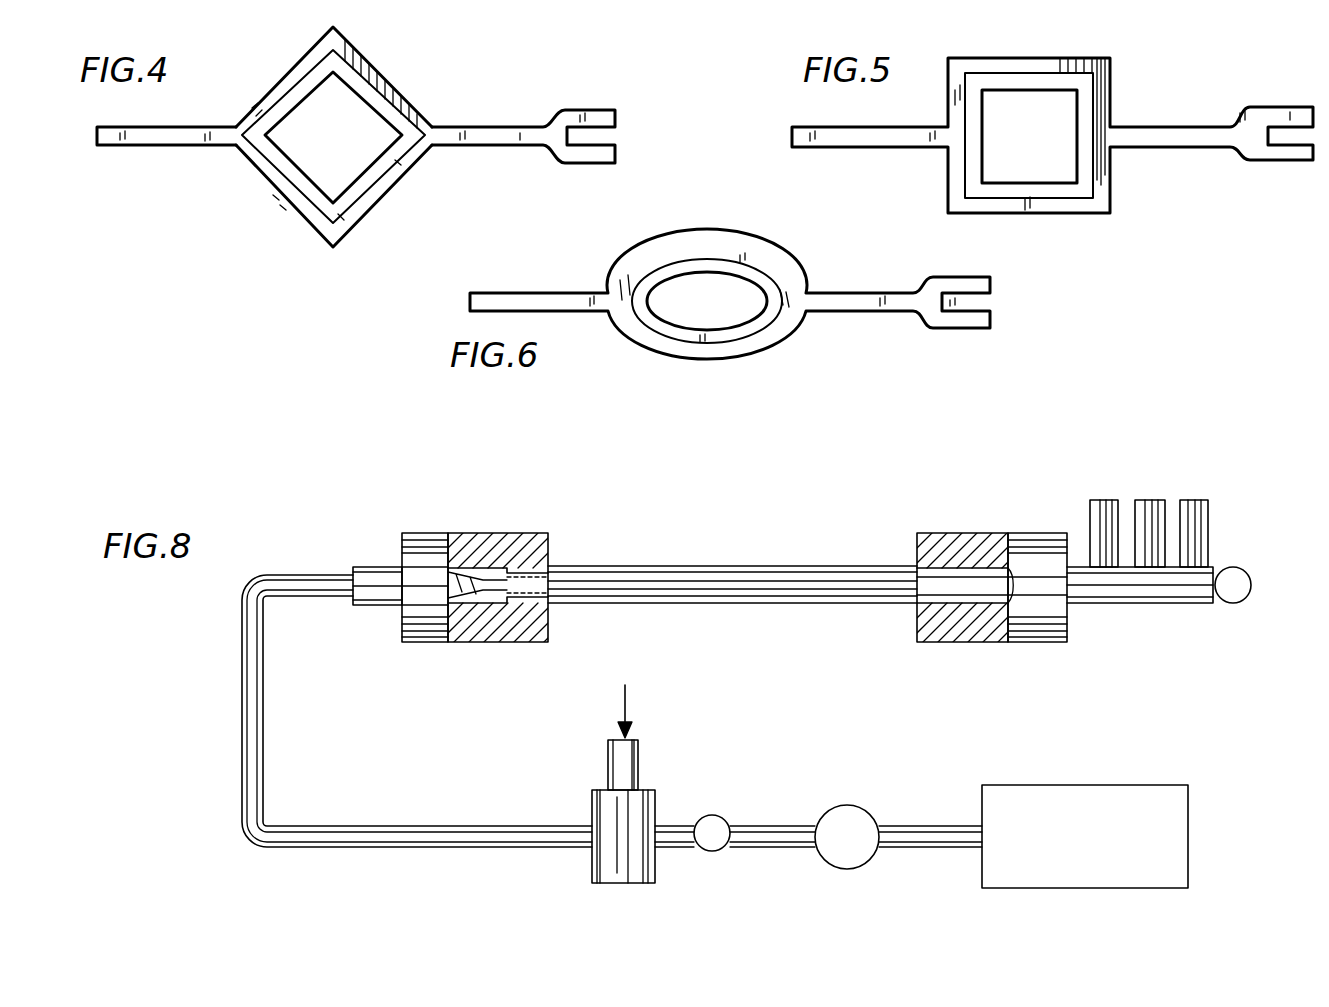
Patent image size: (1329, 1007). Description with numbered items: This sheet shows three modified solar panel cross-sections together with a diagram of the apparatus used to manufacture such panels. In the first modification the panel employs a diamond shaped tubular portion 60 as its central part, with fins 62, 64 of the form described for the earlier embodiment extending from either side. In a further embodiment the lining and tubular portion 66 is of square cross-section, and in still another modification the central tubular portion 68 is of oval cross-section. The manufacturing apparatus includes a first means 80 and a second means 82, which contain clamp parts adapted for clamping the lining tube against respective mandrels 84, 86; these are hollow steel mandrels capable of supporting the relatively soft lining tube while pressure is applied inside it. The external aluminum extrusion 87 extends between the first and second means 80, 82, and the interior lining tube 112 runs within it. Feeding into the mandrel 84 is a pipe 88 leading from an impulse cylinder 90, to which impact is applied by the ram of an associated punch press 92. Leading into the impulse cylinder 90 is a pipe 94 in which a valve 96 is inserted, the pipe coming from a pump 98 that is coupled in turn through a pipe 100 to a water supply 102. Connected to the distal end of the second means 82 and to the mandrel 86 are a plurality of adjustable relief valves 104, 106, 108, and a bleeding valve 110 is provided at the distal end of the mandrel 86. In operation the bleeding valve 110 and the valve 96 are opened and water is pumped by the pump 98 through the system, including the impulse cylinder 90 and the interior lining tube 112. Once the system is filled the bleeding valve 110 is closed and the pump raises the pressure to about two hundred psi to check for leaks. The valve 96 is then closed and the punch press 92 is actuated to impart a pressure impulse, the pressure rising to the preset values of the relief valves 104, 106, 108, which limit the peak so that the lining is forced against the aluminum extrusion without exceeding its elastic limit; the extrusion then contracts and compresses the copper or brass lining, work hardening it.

In FIG. 4, the diamond shaped tubular portion 60 is at (273, 190).
In FIG. 4, the fin 62 is at (165, 146).
In FIG. 4, the fin 64 is at (487, 147).
In FIG. 5, the lining and tubular portion of square cross-section 66 is at (1047, 58).
In FIG. 6, the central tubular portion of oval cross-section 68 is at (732, 245).
In FIG. 8, the first means 80 is at (480, 533).
In FIG. 8, the second means 82 is at (947, 533).
In FIG. 8, the mandrel 84 is at (392, 590).
In FIG. 8, the mandrel 86 is at (1110, 605).
In FIG. 8, the external aluminum extrusion 87 is at (750, 545).
In FIG. 8, the pipe 88 is at (255, 760).
In FIG. 8, the impulse cylinder 90 is at (603, 858).
In FIG. 8, the punch press 92 is at (628, 712).
In FIG. 8, the pipe 94 is at (671, 823).
In FIG. 8, the valve 96 is at (700, 853).
In FIG. 8, the pump 98 is at (837, 805).
In FIG. 8, the pipe 100 is at (948, 847).
In FIG. 8, the water supply 102 is at (1055, 785).
In FIG. 8, the adjustable relief valve 104 is at (1100, 500).
In FIG. 8, the adjustable relief valve 106 is at (1147, 500).
In FIG. 8, the adjustable relief valve 108 is at (1195, 500).
In FIG. 8, the bleeding valve 110 is at (1240, 568).
In FIG. 8, the interior lining tube 112 is at (547, 570).